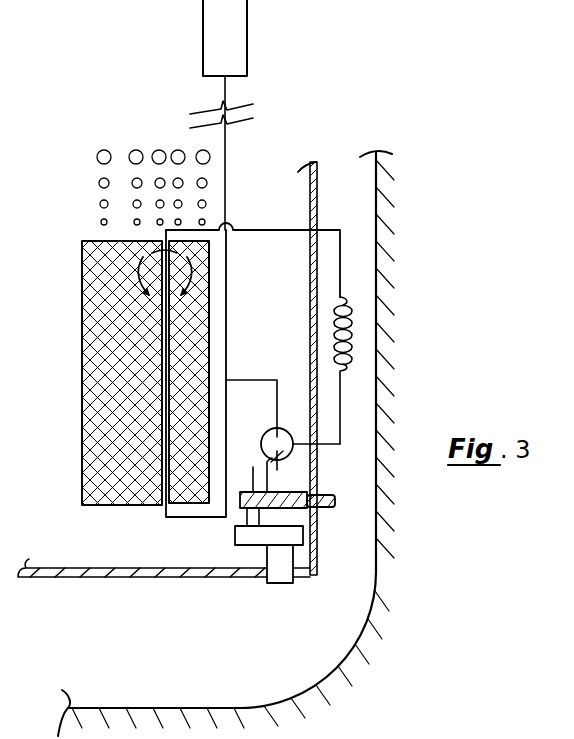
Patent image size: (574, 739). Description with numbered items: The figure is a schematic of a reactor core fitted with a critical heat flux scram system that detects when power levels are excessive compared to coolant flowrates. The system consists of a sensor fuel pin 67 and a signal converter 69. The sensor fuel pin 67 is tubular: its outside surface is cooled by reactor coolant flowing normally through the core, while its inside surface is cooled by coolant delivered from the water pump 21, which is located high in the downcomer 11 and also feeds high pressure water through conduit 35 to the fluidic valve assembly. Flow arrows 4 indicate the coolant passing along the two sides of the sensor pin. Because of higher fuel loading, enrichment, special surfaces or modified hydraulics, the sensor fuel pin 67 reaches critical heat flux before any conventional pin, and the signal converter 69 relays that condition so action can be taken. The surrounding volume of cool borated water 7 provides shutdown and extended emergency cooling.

The water pump 21 is at (247, 29).
The material flow 4 is at (165, 290).
The downcomer 11 is at (269, 308).
The signal converter 69 is at (352, 325).
The sensor fuel pin 67 is at (158, 418).
The conduit 35 is at (274, 405).
The cool borated water 7 is at (347, 467).